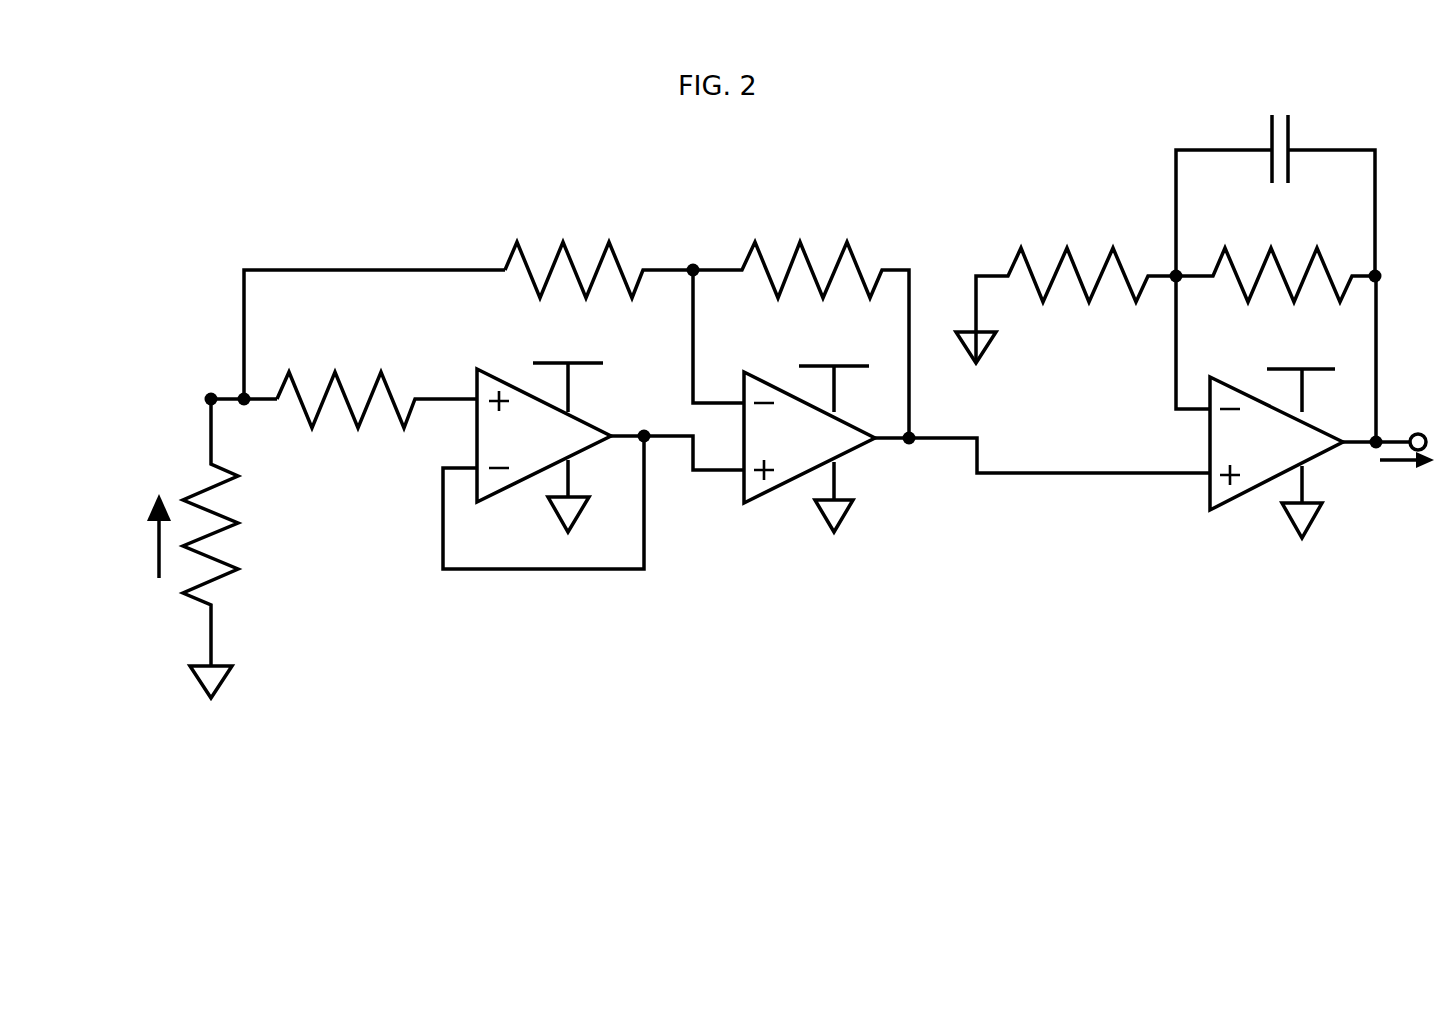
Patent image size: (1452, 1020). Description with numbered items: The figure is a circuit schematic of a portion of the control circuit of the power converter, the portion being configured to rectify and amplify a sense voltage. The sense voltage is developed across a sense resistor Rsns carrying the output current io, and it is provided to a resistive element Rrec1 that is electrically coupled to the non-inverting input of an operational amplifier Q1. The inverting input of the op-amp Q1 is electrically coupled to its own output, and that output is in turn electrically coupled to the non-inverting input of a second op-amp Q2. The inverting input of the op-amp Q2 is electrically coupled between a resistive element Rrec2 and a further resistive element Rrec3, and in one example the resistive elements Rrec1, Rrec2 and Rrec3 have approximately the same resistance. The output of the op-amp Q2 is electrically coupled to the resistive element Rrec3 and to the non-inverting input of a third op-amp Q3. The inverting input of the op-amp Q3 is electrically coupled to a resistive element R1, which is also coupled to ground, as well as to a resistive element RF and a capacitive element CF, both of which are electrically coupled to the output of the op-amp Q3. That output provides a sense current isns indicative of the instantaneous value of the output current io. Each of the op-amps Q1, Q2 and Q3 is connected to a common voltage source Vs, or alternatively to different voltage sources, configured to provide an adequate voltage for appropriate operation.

The sense resistor Rsns is at (242, 548).
The output current io is at (158, 556).
The resistive element Rrec1 is at (377, 385).
The resistive element Rrec2 is at (602, 248).
The resistive element Rrec3 is at (801, 321).
The operational amplifier Q1 is at (593, 469).
The operational amplifier Q2 is at (951, 401).
The operational amplifier Q3 is at (1293, 407).
The resistive element R1 is at (1069, 282).
The resistive element RF is at (1279, 257).
The capacitive element CF is at (1275, 172).
The voltage source Vs is at (934, 367).
The sense current isns is at (1409, 471).